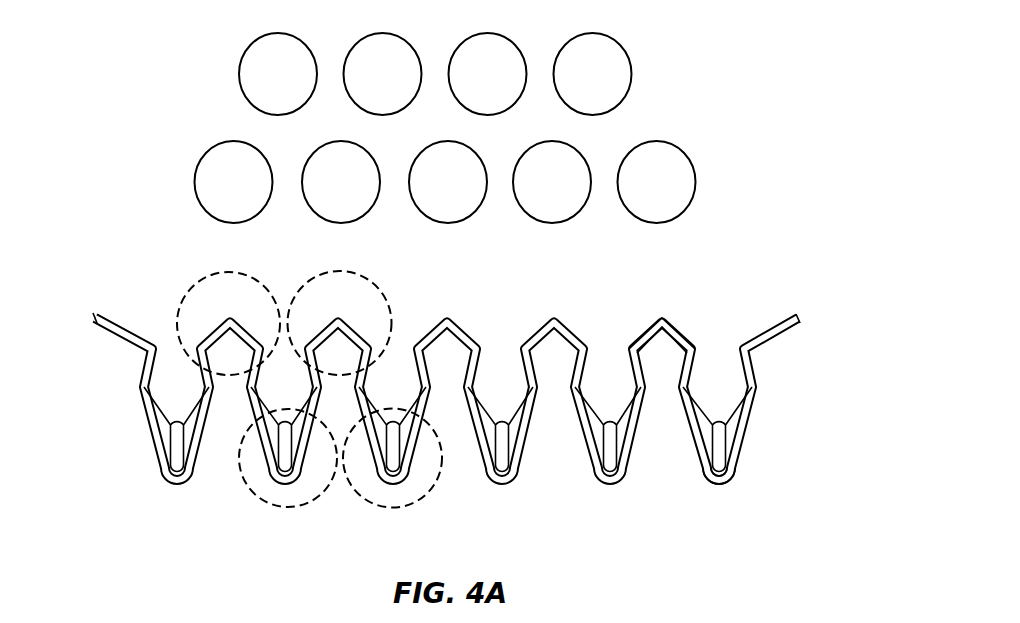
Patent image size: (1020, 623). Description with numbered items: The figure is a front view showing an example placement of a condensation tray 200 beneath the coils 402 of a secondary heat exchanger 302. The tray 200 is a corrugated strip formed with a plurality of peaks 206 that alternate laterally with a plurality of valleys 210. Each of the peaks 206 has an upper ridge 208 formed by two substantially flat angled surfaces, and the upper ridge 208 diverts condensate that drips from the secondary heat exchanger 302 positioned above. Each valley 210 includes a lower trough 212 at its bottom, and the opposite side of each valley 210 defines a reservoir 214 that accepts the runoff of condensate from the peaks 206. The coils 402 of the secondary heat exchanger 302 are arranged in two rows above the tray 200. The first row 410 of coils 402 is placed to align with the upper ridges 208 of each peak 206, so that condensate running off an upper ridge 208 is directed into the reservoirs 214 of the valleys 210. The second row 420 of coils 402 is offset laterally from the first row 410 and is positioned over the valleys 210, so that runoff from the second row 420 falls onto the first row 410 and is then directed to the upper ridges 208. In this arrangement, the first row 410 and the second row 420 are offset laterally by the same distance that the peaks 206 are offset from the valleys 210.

The tray 200 is at (112, 358).
The peaks 206 is at (323, 272).
The upper ridge 208 is at (667, 320).
The valleys 210 is at (375, 507).
The lower trough 212 is at (718, 484).
The reservoir 214 is at (506, 466).
The secondary heat exchanger 302 is at (524, 119).
The coils 402 is at (217, 143).
The first row 410 is at (474, 144).
The second row 420 is at (660, 88).